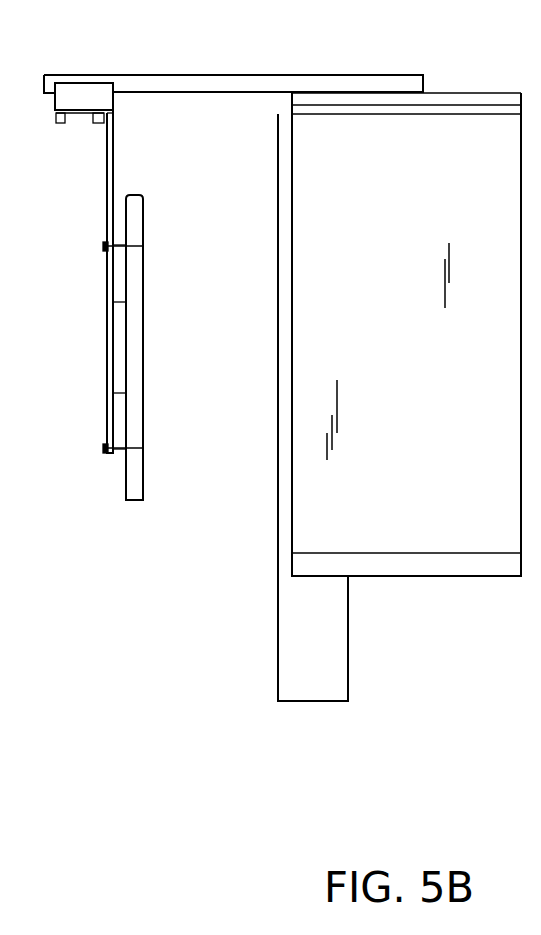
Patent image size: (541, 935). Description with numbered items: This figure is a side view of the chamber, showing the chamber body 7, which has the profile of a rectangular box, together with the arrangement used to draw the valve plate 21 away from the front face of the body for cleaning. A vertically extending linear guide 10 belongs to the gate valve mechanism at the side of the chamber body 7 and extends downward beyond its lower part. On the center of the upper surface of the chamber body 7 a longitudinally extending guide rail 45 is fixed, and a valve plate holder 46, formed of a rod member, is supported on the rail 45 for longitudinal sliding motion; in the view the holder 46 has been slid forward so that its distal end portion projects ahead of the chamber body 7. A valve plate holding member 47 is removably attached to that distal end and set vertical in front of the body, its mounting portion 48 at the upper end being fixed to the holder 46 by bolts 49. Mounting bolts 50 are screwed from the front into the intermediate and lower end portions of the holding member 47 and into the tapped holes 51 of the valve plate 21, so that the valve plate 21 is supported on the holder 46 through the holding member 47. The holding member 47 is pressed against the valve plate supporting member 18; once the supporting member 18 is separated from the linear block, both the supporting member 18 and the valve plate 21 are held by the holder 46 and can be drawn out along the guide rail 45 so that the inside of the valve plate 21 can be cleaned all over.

The chamber body 7 is at (466, 532).
The linear guide 10 is at (330, 646).
The valve plate supporting member 18 is at (105, 295).
The valve plate 21 is at (146, 341).
The guide rail 45 is at (478, 93).
The valve plate holder 46 is at (277, 76).
The valve plate holding member 47 is at (115, 162).
The mounting portion 48 is at (66, 100).
The bolts 49 is at (61, 124).
The mounting bolts 50 is at (103, 247).
The tapped holes 51 is at (143, 246).